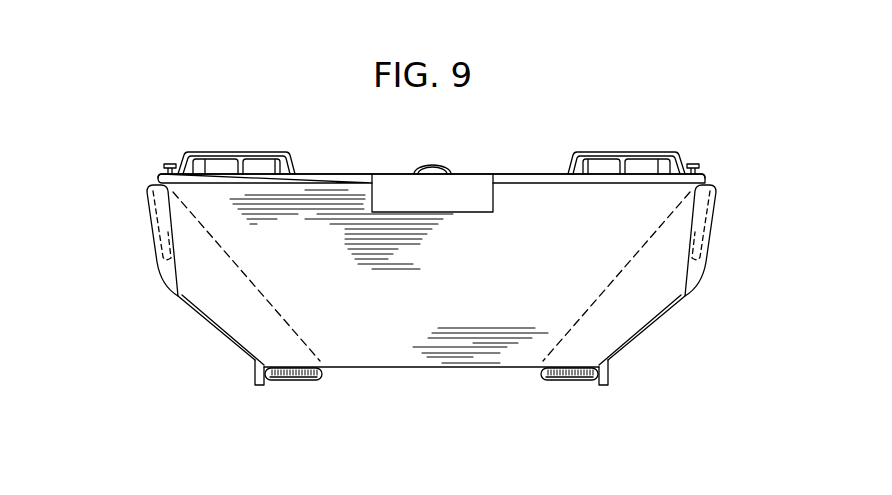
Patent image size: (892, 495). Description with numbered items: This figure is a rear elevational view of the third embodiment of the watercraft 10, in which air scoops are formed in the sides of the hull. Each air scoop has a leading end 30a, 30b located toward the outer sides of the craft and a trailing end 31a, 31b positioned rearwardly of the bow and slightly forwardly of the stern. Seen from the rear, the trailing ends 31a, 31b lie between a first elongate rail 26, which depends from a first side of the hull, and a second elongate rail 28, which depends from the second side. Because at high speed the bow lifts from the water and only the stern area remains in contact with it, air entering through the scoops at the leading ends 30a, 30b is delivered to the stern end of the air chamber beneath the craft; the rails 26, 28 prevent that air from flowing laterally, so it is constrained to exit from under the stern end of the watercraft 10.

The watercraft 10 is at (254, 103).
The first elongate rail 26 is at (255, 367).
The second elongate rail 28 is at (608, 366).
The leading end of air scoop 30a is at (150, 221).
The leading end of air scoop 30b is at (714, 220).
The trailing end of air scoop 31a is at (300, 381).
The trailing end of air scoop 31b is at (563, 380).